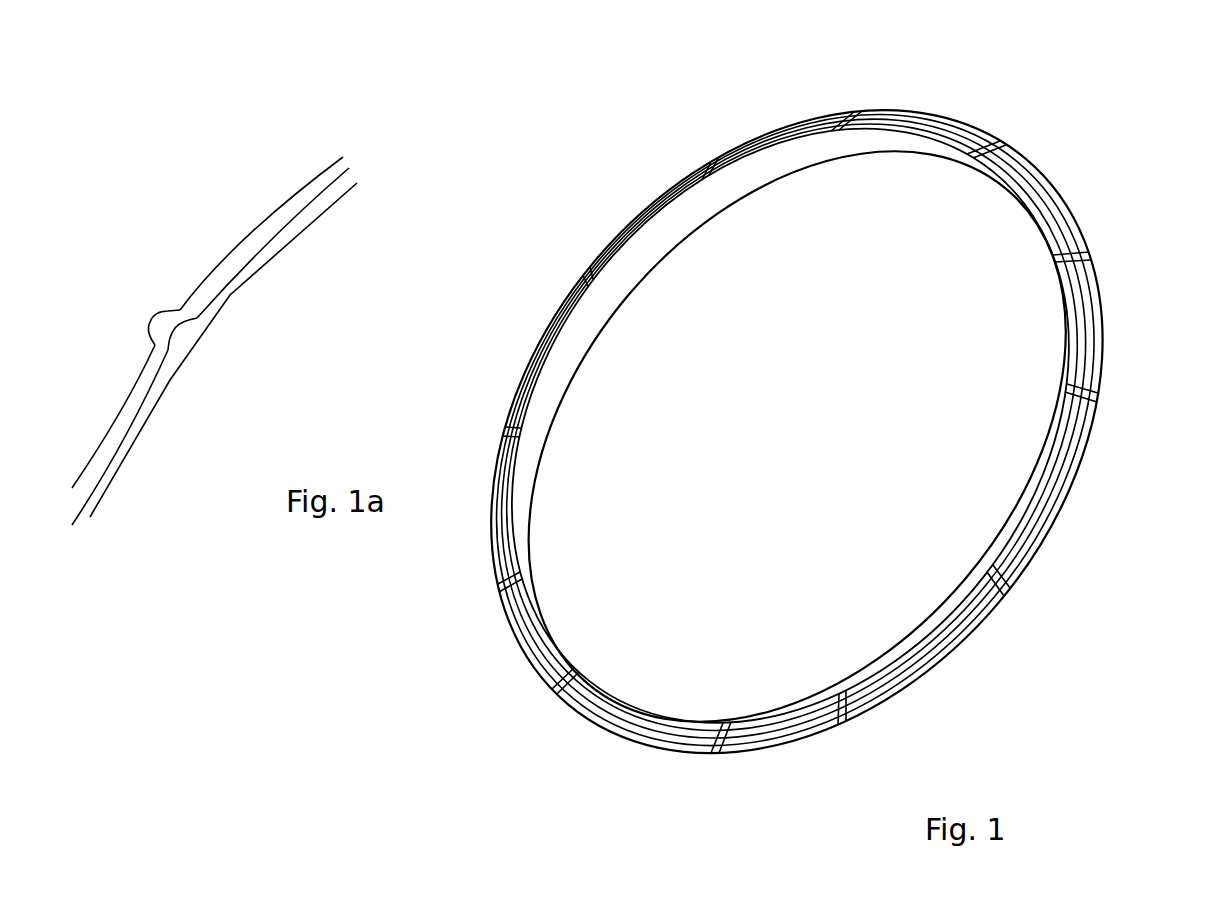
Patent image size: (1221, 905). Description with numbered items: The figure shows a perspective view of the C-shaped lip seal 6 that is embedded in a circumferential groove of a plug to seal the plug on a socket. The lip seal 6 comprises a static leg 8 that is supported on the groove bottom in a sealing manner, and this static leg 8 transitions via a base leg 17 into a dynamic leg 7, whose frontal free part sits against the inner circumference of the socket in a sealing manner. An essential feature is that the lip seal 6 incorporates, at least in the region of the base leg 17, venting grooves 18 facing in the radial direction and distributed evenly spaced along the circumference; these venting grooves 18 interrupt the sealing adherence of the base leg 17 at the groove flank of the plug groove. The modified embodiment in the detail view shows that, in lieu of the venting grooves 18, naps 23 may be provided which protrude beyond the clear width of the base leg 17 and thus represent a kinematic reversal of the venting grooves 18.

In FIG. 1, the lip seal 6 is at (936, 116).
In FIG. 1A, the lip seal 6 is at (348, 157).
In FIG. 1, the dynamic leg 7 is at (652, 247).
In FIG. 1, the static leg 8 is at (1057, 478).
In FIG. 1, the base leg 17 is at (1025, 522).
In FIG. 1A, the base leg 17 is at (120, 413).
In FIG. 1, the venting grooves 18 is at (1002, 152).
In FIG. 1A, the naps 23 is at (167, 323).